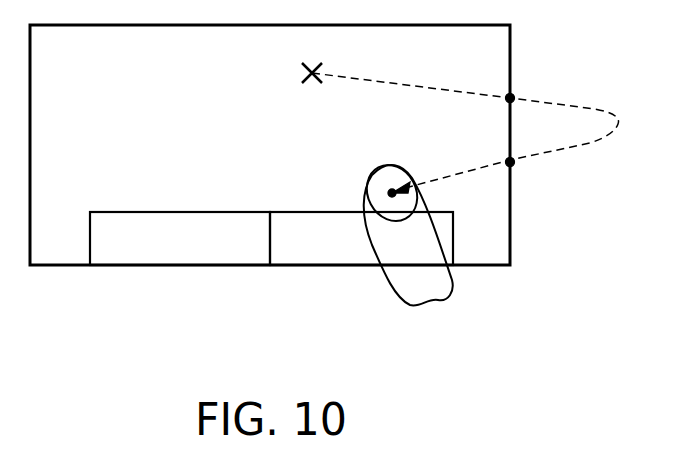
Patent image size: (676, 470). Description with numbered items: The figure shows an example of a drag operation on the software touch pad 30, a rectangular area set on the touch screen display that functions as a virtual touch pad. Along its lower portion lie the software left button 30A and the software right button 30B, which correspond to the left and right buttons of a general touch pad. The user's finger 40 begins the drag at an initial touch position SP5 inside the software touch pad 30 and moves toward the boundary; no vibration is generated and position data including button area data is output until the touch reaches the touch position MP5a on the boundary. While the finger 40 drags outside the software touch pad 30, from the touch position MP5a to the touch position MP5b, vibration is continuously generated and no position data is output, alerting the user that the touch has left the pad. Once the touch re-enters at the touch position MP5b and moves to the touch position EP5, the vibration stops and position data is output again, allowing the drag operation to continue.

The software touch pad 30 is at (512, 238).
The software left button 30A is at (155, 256).
The software right button 30B is at (298, 256).
The finger 40 is at (452, 287).
The initial touch position SP5 is at (313, 86).
The touch position EP5 is at (391, 188).
The touch position MP5a is at (514, 96).
The touch position MP5b is at (514, 166).